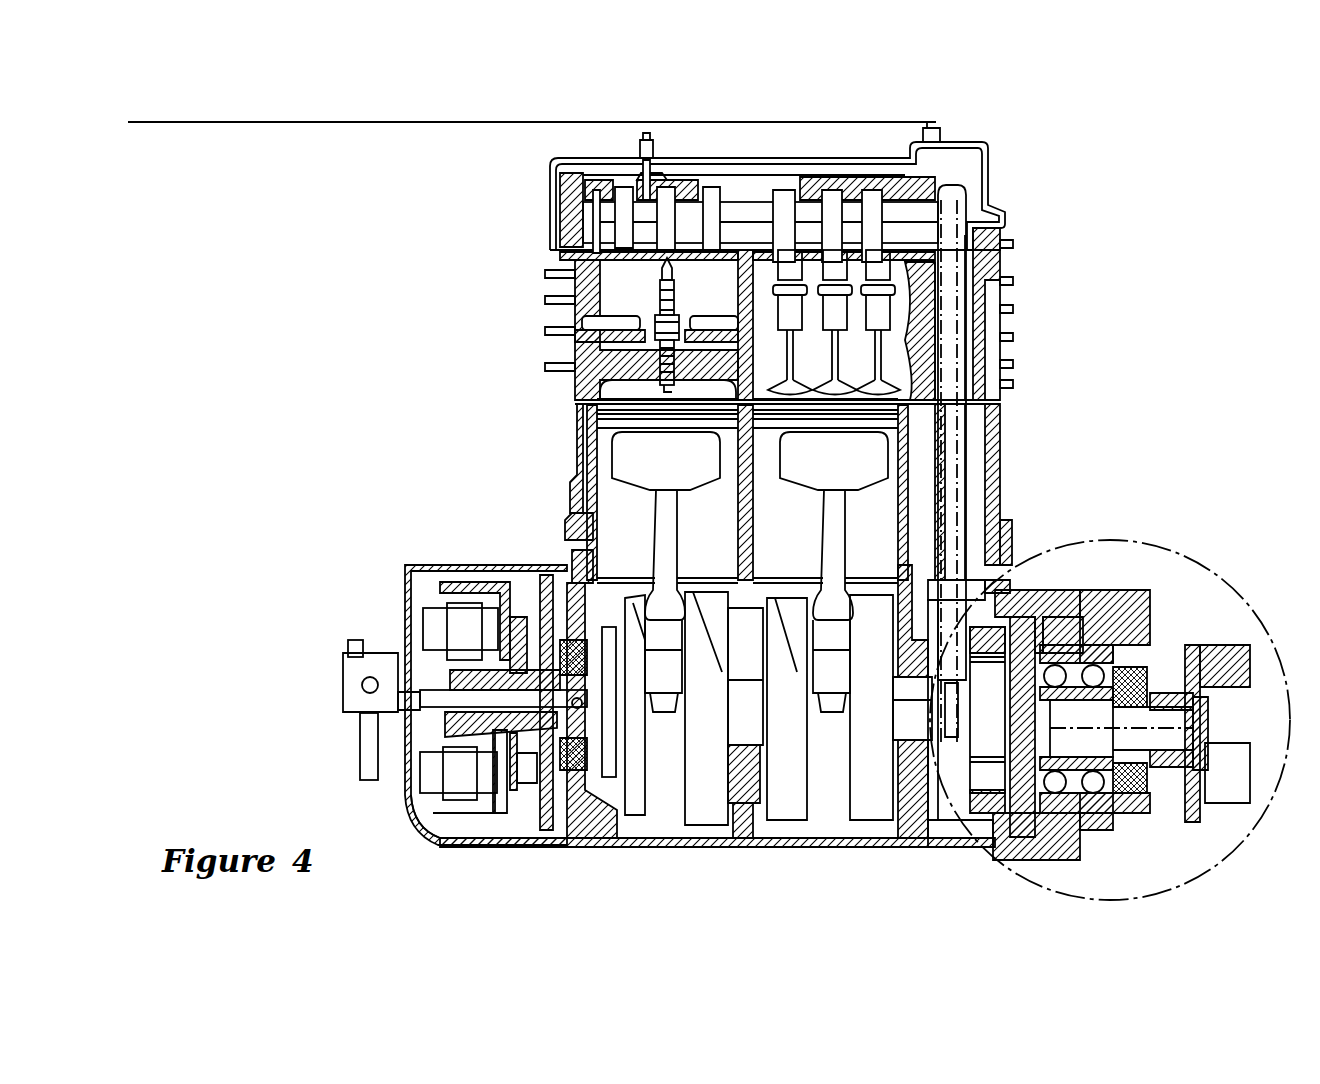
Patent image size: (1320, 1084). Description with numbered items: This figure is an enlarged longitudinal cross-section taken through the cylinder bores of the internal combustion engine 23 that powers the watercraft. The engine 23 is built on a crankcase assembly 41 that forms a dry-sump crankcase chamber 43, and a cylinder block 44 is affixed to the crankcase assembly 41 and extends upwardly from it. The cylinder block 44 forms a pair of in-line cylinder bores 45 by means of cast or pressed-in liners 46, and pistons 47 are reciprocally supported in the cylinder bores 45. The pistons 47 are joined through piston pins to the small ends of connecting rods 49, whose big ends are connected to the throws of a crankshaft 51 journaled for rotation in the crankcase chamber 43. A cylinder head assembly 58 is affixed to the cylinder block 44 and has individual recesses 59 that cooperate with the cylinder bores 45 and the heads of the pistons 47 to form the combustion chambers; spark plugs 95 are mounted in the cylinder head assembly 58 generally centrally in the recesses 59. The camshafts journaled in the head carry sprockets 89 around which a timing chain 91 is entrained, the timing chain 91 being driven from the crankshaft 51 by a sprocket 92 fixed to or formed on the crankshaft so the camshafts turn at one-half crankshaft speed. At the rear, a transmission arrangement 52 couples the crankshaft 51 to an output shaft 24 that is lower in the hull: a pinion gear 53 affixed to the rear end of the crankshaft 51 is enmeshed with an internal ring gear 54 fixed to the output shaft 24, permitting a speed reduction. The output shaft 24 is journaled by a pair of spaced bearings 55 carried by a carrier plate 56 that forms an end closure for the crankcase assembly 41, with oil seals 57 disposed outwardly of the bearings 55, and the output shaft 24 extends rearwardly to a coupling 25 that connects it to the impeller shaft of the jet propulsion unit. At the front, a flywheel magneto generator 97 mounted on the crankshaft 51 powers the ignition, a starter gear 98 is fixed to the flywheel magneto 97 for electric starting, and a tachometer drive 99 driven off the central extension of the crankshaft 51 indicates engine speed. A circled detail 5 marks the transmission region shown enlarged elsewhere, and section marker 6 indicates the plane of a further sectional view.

The internal combustion engine 23 is at (1028, 168).
The spark plug 95 is at (712, 290).
The sprocket 89 is at (955, 183).
The timing chain 91 is at (968, 312).
The cylinder head assembly 58 is at (560, 332).
The recess 59 is at (572, 400).
The cylinder block 44 is at (990, 442).
The liner 46 is at (580, 487).
The cylinder bore 45 is at (600, 562).
The piston 47 is at (636, 478).
The connecting rod 49 is at (672, 526).
The crankcase chamber 43 is at (673, 778).
The crankshaft 51 is at (905, 697).
The crankcase assembly 41 is at (855, 850).
The sprocket 92 is at (985, 582).
The pinion gear 53 is at (977, 747).
The internal ring gear 54 is at (967, 823).
The transmission arrangement 52 is at (960, 832).
The bearing 55 is at (1093, 668).
The carrier plate 56 is at (1122, 645).
The oil seal 57 is at (1135, 783).
The output shaft 24 is at (1082, 745).
The coupling 25 is at (1225, 803).
The detail circle FIG. 5 is at (1182, 540).
The magneto generator 97 is at (466, 585).
The starter gear 98 is at (548, 840).
The tachometer drive 99 is at (343, 700).
The section line FIG. 6 is at (835, 92).